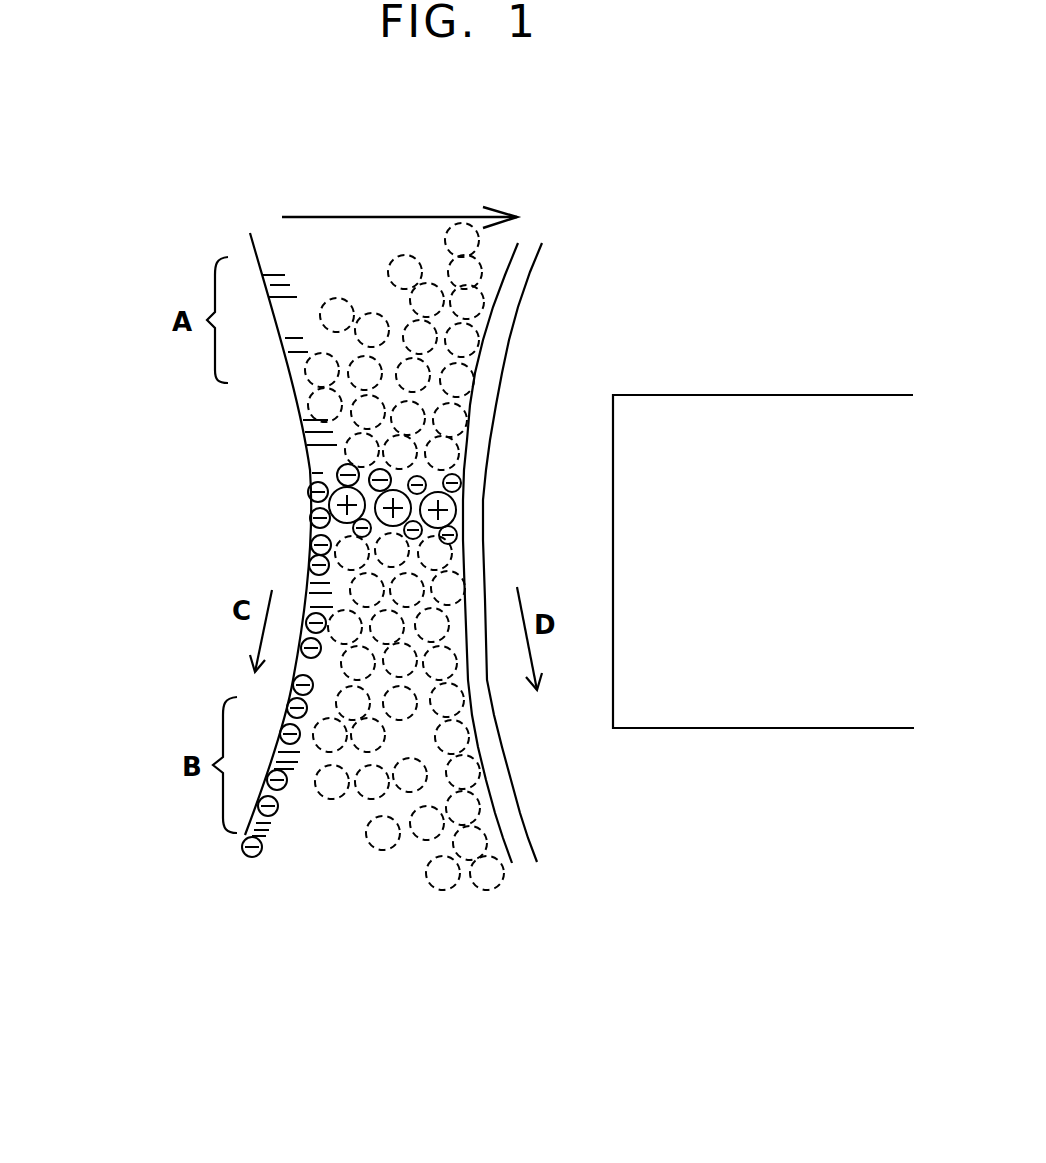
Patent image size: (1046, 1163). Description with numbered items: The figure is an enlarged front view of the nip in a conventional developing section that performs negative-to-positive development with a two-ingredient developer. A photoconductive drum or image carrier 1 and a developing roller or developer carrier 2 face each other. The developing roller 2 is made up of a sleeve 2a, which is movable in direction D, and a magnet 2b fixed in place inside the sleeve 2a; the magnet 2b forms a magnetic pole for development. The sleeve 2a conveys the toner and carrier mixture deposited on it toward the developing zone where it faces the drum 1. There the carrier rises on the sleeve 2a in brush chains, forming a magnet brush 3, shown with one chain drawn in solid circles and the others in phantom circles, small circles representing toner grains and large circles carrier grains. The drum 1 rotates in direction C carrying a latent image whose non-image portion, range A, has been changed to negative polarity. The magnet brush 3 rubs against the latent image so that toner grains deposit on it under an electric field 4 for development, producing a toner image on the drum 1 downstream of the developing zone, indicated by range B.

The photoconductive drum 1 is at (140, 222).
The developing roller 2 is at (688, 489).
The sleeve 2a is at (508, 296).
The magnet 2b is at (835, 383).
The magnet brush 3 is at (407, 780).
The electric field 4 is at (370, 217).